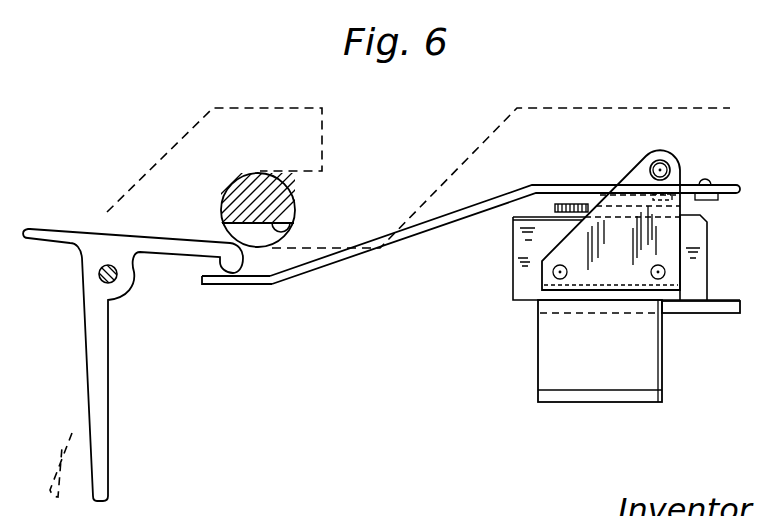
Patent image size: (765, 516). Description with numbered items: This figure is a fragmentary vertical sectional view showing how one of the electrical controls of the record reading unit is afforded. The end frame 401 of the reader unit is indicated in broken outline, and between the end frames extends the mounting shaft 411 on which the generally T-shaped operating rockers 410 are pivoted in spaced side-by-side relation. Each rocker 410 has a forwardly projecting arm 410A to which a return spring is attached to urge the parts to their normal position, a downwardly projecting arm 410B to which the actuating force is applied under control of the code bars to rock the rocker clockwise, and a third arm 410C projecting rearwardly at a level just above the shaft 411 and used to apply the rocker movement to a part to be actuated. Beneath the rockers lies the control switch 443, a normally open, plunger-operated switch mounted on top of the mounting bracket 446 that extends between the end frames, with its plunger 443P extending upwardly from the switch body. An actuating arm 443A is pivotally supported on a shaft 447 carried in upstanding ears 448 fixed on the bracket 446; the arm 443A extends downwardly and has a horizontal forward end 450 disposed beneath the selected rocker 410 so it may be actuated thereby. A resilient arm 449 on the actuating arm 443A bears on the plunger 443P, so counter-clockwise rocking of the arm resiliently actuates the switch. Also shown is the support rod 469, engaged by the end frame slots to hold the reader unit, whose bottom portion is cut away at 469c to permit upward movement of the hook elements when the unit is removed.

The end frame 401 is at (168, 149).
The operating rocker 410 is at (114, 382).
The forwardly projecting arm 410A is at (42, 246).
The downwardly projecting arm 410B is at (89, 423).
The third arm 410C is at (157, 245).
The mounting shaft 411 is at (98, 285).
The rod 469 is at (272, 203).
The cut-away bottom portion 469c is at (291, 230).
The horizontal forward end 450 is at (222, 278).
The actuating arm 443A is at (323, 263).
The control switch 443 is at (523, 255).
The plunger 443P is at (553, 207).
The upstanding ear 448 is at (663, 228).
The shaft 447 is at (672, 163).
The resilient arm 449 is at (590, 205).
The mounting bracket 446 is at (685, 308).